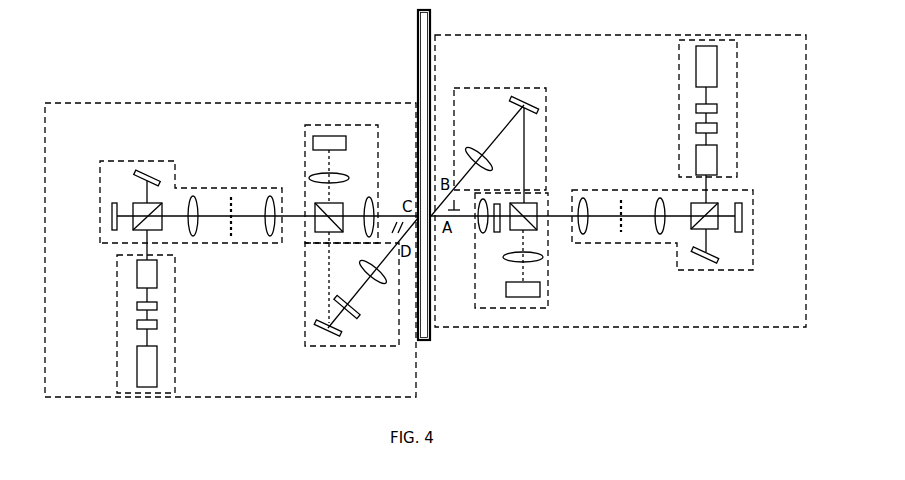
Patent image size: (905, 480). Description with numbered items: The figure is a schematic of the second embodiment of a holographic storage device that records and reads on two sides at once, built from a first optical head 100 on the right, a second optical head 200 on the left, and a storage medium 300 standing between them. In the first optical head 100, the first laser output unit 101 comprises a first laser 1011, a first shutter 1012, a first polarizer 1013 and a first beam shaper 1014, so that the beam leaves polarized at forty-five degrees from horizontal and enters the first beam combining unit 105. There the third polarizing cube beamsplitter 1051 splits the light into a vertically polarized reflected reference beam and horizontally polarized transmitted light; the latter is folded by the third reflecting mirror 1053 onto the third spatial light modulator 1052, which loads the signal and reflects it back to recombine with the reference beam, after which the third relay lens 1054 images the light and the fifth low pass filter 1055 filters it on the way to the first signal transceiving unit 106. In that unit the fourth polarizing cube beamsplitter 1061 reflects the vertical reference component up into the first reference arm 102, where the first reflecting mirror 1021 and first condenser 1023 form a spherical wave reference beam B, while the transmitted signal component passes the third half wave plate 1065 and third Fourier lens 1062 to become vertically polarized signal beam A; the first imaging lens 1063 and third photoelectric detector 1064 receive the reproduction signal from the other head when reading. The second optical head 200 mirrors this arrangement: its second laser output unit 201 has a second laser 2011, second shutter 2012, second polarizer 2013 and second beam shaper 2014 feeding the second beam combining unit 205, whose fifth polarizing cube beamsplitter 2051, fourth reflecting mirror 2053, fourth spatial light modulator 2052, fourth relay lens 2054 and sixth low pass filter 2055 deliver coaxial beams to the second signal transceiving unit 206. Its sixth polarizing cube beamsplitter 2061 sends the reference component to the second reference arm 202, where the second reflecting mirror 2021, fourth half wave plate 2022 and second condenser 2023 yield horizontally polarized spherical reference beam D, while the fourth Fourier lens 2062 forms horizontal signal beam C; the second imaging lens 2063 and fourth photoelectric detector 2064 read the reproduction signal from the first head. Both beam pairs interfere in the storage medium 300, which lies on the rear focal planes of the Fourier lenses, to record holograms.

The first optical head 100 is at (648, 328).
The first laser output unit 101 is at (679, 102).
The first laser 1011 is at (717, 72).
The first shutter 1012 is at (717, 108).
The first polarizer 1013 is at (717, 128).
The first beam shaper 1014 is at (717, 160).
The first reference arm 102 is at (546, 112).
The first reflecting mirror 1021 is at (530, 101).
The first condenser 1023 is at (475, 150).
The first beam combining unit 105 is at (676, 188).
The third polarizing cube beamsplitter 1051 is at (722, 200).
The third spatial light modulator 1052 is at (697, 255).
The third reflecting mirror 1053 is at (707, 265).
The third relay lens 1054 is at (660, 234).
The fifth low pass filter 1055 is at (621, 232).
The first signal transceiving unit 106 is at (547, 193).
The fourth polarizing cube beamsplitter 1061 is at (537, 230).
The third Fourier lens 1062 is at (485, 233).
The first imaging lens 1063 is at (505, 257).
The third photoelectric detector 1064 is at (505, 288).
The third half wave plate 1065 is at (497, 204).
The second optical head 200 is at (202, 103).
The second laser output unit 201 is at (175, 330).
The second laser 2011 is at (137, 358).
The second shutter 2012 is at (136, 324).
The second polarizer 2013 is at (136, 305).
The second beam shaper 2014 is at (137, 270).
The second reference arm 202 is at (306, 320).
The second reflecting mirror 2021 is at (330, 333).
The fourth half wave plate 2022 is at (352, 316).
The second condenser 2023 is at (377, 287).
The second beam combining unit 205 is at (173, 244).
The fifth polarizing cube beamsplitter 2051 is at (133, 230).
The fourth spatial light modulator 2052 is at (112, 215).
The fourth reflecting mirror 2053 is at (145, 168).
The fourth relay lens 2054 is at (267, 198).
The sixth low pass filter 2055 is at (231, 197).
The second signal transceiving unit 206 is at (306, 243).
The sixth polarizing cube beamsplitter 2061 is at (315, 203).
The fourth Fourier lens 2062 is at (372, 200).
The second imaging lens 2063 is at (348, 178).
The fourth photoelectric detector 2064 is at (347, 143).
The storage medium 300 is at (435, 342).